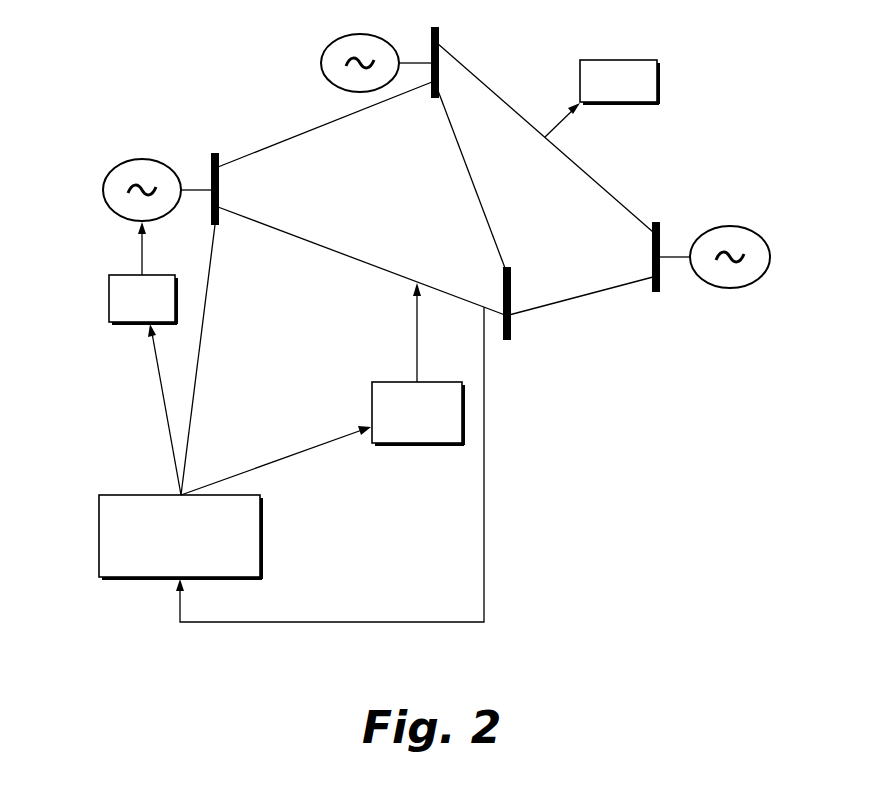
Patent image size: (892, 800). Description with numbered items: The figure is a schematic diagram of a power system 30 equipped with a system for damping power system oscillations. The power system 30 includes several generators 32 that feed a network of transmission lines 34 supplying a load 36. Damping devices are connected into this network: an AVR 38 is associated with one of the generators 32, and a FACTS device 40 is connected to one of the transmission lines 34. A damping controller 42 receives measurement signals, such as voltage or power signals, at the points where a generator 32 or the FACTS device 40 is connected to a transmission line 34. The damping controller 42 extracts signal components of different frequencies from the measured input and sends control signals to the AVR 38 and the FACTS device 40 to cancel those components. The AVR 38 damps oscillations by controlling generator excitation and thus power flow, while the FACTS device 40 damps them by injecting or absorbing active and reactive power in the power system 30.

The power system 30 is at (778, 75).
The generator 32 is at (321, 63).
The transmission line 34 is at (325, 125).
The load 36 is at (658, 82).
The AVR 38 is at (109, 302).
The FACTS device 40 is at (372, 402).
The damping controller 42 is at (99, 520).